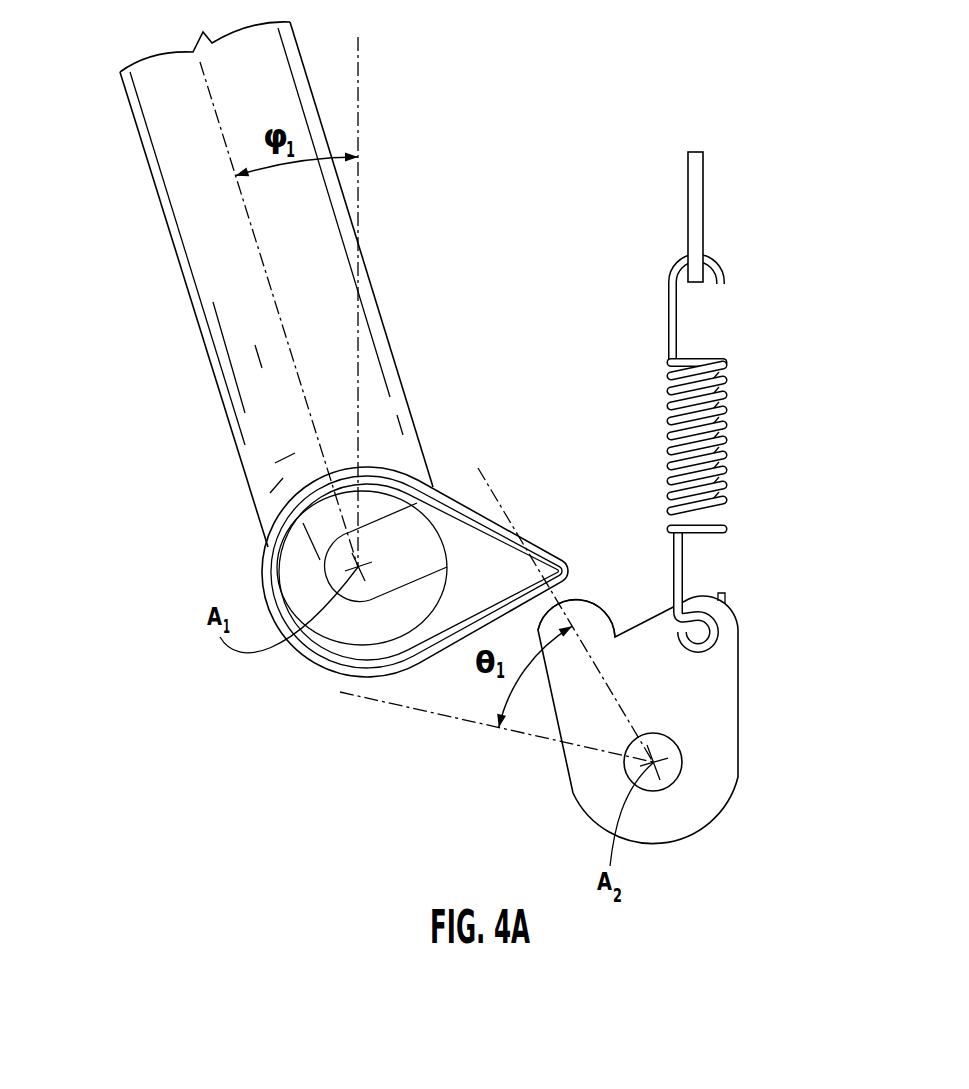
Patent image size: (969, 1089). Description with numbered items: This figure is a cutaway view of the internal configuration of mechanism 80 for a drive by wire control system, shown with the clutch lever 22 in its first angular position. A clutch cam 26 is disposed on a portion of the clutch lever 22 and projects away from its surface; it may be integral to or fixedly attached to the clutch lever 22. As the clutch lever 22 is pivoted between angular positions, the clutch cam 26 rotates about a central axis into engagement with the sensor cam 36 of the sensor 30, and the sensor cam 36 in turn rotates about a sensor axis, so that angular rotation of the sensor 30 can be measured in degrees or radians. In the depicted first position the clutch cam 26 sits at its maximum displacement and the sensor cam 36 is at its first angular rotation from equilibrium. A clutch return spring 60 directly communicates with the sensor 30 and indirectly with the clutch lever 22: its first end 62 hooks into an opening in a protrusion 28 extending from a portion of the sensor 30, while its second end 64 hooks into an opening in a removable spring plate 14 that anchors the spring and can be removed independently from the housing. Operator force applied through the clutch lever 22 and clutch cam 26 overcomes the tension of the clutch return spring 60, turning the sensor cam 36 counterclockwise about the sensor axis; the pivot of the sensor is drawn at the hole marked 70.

The mechanism 80 is at (100, 153).
The clutch lever 22 is at (217, 273).
The clutch cam 26 is at (442, 647).
The removable spring plate 14 is at (705, 197).
The second end 64 is at (667, 335).
The clutch return spring 60 is at (772, 368).
The first end 62 is at (672, 580).
The sensor 30 is at (790, 522).
The sensor cam 36 is at (582, 600).
The protrusion 28 is at (740, 690).
The pivot hole 70 is at (690, 785).